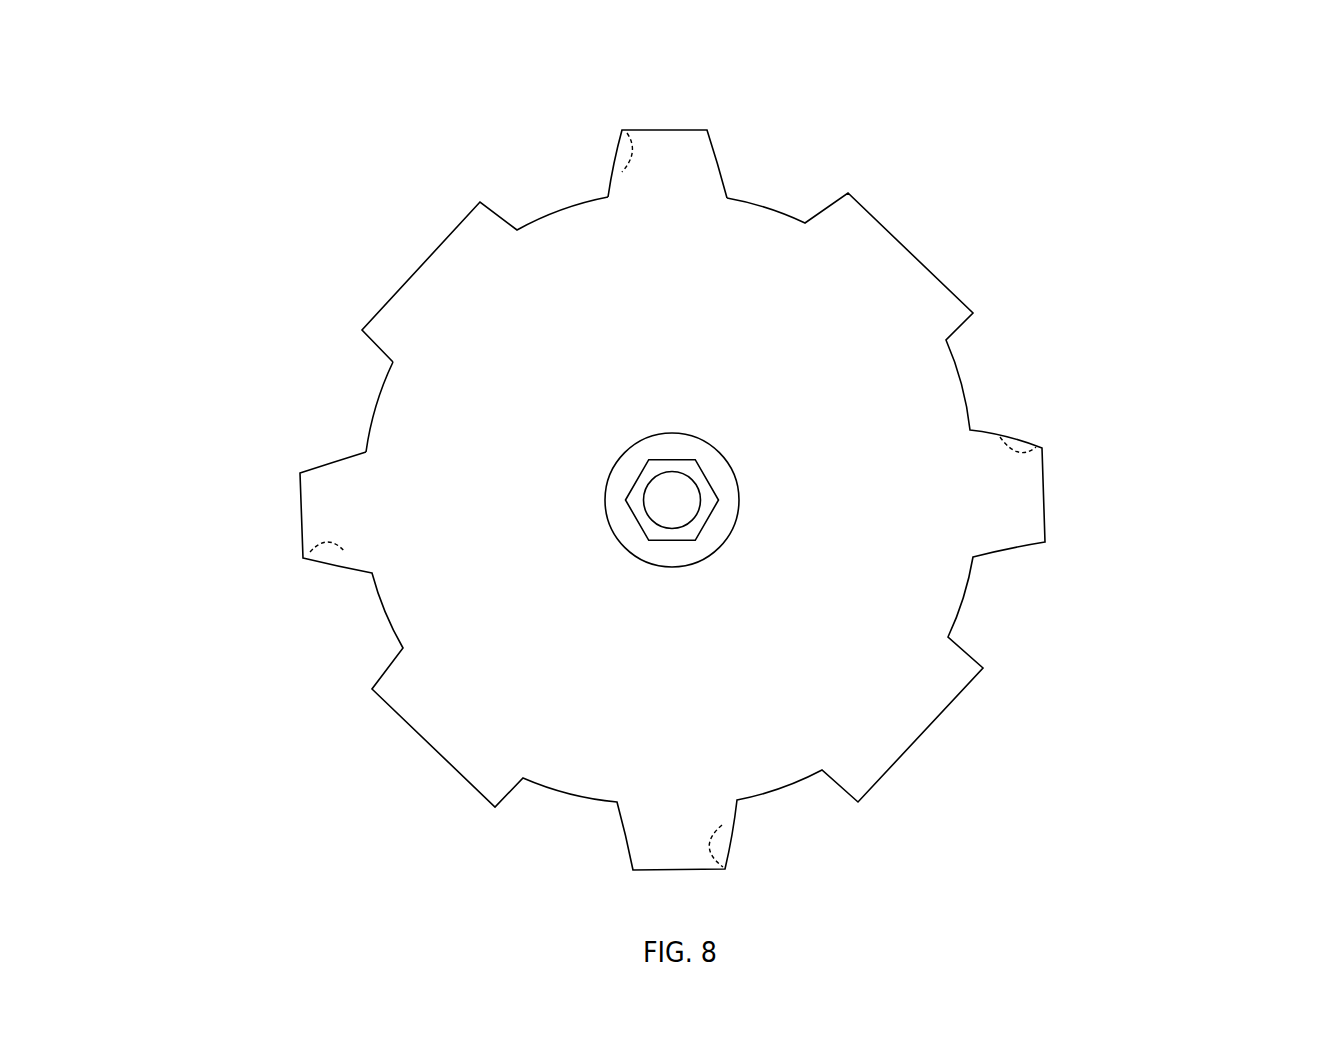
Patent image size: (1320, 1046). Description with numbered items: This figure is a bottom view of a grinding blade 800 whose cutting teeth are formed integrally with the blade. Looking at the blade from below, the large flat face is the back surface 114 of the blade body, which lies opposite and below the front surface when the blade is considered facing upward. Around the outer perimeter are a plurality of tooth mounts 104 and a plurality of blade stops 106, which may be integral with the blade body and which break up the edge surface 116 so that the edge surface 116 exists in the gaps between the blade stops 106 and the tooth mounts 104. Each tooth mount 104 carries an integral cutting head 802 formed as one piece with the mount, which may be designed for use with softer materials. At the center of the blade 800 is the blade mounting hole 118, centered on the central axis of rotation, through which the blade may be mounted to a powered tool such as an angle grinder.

The grinding blade 800 is at (1195, 147).
The tooth mount 104 is at (682, 155).
The integral cutting head 802 is at (583, 154).
The blade stop 106 is at (472, 242).
The back surface 114 is at (698, 351).
The edge surface 116 is at (340, 393).
The blade mounting hole 118 is at (667, 485).